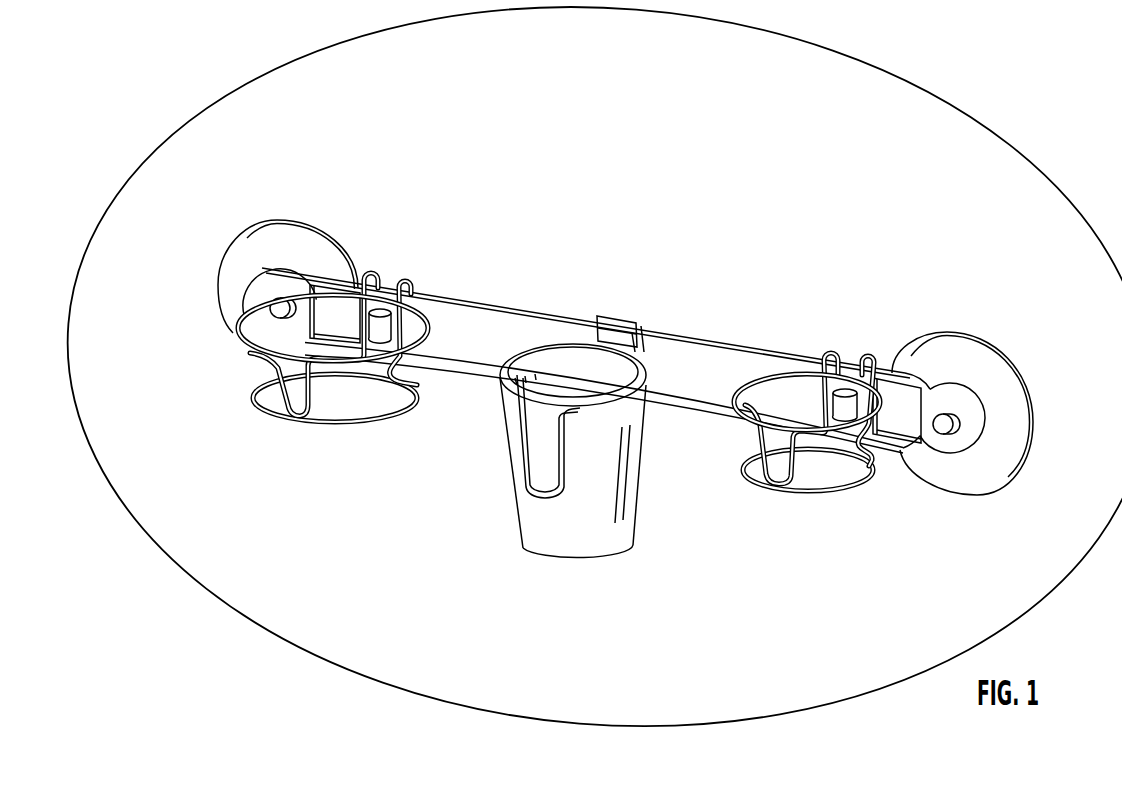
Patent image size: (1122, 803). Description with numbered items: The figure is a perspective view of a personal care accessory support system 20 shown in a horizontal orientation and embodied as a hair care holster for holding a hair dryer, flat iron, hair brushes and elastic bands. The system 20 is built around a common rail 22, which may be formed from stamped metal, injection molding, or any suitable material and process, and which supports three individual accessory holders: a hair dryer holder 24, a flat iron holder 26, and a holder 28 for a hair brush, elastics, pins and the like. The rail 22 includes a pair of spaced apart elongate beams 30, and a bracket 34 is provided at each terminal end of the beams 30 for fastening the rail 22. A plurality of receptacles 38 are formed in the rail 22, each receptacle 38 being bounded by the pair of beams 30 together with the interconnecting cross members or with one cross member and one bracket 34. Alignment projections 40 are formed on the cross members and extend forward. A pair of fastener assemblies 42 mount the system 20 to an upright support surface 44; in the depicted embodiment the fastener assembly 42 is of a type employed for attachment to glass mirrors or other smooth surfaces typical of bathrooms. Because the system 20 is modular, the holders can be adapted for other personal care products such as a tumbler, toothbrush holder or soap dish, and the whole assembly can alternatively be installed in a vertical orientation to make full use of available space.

The personal care accessory support system 20 is at (640, 402).
The rail 22 is at (596, 352).
The hair dryer holder 24 is at (339, 358).
The flat iron holder 26 is at (799, 492).
The holder 28 is at (565, 540).
The elongate beams 30 is at (467, 303).
The bracket 34 is at (960, 397).
The receptacles 38 is at (490, 374).
The alignment projections 40 is at (381, 327).
The fastener assemblies 42 is at (965, 412).
The upright support surface 44 is at (468, 133).